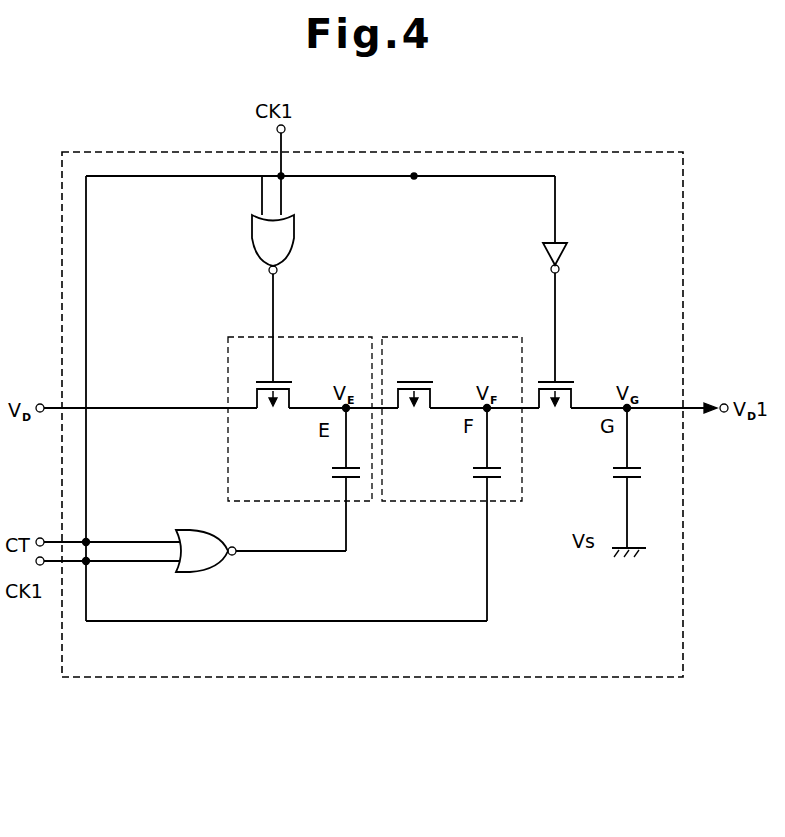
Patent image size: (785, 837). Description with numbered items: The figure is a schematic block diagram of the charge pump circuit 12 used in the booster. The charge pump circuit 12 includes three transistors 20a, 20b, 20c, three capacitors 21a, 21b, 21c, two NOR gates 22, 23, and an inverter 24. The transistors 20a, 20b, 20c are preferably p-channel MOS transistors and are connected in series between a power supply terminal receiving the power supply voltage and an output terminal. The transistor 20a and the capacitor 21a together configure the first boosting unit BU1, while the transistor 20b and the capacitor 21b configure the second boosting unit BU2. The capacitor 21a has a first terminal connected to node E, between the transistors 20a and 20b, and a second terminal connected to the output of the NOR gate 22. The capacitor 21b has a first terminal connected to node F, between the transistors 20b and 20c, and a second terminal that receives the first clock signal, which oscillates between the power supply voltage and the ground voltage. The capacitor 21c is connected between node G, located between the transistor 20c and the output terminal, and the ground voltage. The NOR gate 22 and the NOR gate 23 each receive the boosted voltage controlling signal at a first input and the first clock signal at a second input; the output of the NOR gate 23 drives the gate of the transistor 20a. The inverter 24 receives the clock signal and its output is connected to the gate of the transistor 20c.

The charge pump circuit 12 is at (686, 655).
The transistor 20a is at (306, 400).
The transistor 20b is at (447, 400).
The transistor 20c is at (588, 400).
The capacitor 21a is at (342, 467).
The capacitor 21b is at (484, 467).
The capacitor 21c is at (624, 467).
The NOR gate 22 is at (186, 530).
The NOR gate 23 is at (294, 228).
The inverter 24 is at (562, 243).
The first boosting unit BU1 is at (300, 337).
The second boosting unit BU2 is at (453, 337).